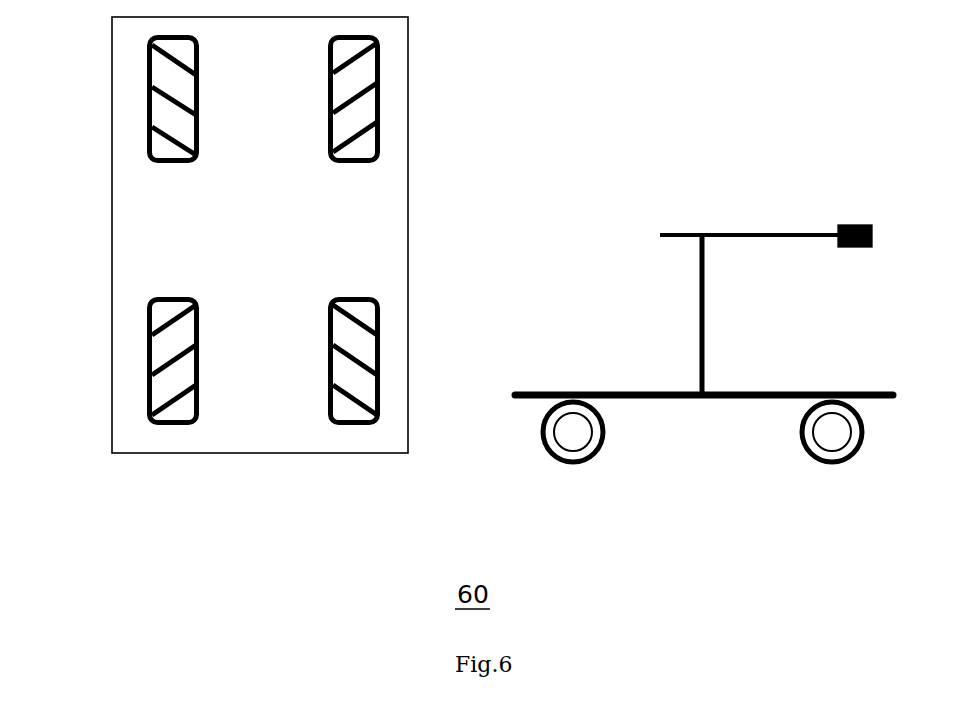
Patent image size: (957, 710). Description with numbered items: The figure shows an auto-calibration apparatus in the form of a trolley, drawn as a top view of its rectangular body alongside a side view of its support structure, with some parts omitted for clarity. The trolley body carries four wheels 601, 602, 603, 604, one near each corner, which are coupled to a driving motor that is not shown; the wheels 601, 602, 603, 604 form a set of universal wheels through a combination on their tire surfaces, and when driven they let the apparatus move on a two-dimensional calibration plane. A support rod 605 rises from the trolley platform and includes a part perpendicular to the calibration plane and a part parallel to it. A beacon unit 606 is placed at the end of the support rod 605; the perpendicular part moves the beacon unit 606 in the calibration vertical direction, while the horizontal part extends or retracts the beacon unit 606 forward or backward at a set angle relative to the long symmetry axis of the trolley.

The wheel 601 is at (380, 68).
The wheel 602 is at (145, 70).
The wheel 603 is at (145, 352).
The wheel 604 is at (380, 352).
The support rod 605 is at (703, 338).
The beacon unit 606 is at (857, 223).